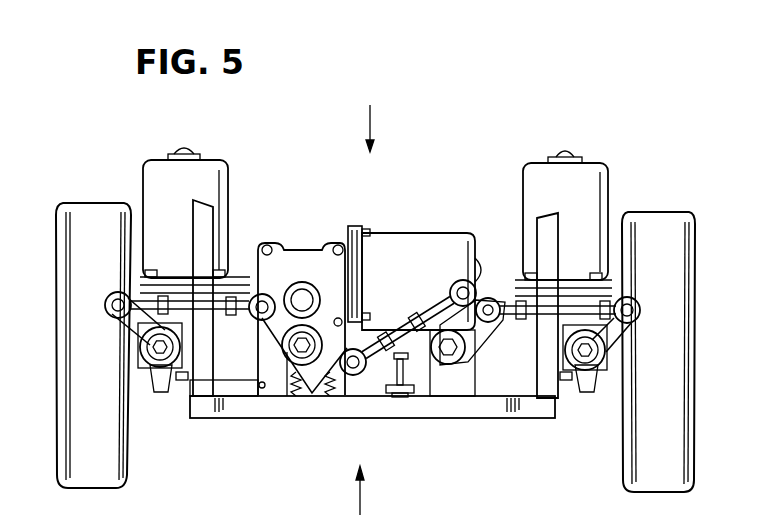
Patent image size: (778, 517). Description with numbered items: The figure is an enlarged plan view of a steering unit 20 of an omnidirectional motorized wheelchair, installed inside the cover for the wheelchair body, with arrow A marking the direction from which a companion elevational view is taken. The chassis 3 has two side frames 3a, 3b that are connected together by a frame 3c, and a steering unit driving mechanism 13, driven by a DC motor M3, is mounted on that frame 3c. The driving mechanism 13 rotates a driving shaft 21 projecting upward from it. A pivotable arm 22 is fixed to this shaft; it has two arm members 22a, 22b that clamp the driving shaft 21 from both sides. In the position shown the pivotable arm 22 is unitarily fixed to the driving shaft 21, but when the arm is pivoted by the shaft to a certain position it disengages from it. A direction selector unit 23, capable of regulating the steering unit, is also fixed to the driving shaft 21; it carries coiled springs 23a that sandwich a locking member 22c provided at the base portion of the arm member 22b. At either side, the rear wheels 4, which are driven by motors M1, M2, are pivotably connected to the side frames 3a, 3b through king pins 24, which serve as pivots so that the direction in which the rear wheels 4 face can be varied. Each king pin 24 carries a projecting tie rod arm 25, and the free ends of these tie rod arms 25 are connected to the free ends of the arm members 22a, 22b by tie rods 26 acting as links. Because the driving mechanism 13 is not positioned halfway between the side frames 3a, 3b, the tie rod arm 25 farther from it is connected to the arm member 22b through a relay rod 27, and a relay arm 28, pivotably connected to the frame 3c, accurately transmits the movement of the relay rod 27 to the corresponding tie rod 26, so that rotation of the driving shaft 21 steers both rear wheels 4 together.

The chassis 3 is at (492, 422).
The side frame 3a is at (203, 210).
The side frame 3b is at (547, 222).
The frame 3c is at (520, 416).
The rear wheel 4 is at (105, 208).
The motor M1 is at (165, 170).
The motor M2 is at (588, 180).
The DC motor M3 is at (455, 245).
The steering unit driving mechanism 13 is at (300, 258).
The steering unit 20 is at (424, 188).
The driving shaft 21 is at (262, 380).
The pivotable arm 22 is at (325, 298).
The arm member 22a is at (264, 244).
The arm member 22b is at (364, 340).
The locking member 22c is at (310, 398).
The direction selector unit 23 is at (278, 410).
The coiled spring 23a is at (331, 398).
The king pin 24 is at (160, 347).
The tie rod arm 25 is at (135, 323).
The tie rod 26 is at (200, 416).
The relay rod 27 is at (410, 396).
The relay arm 28 is at (472, 338).
The arrow A is at (367, 298).